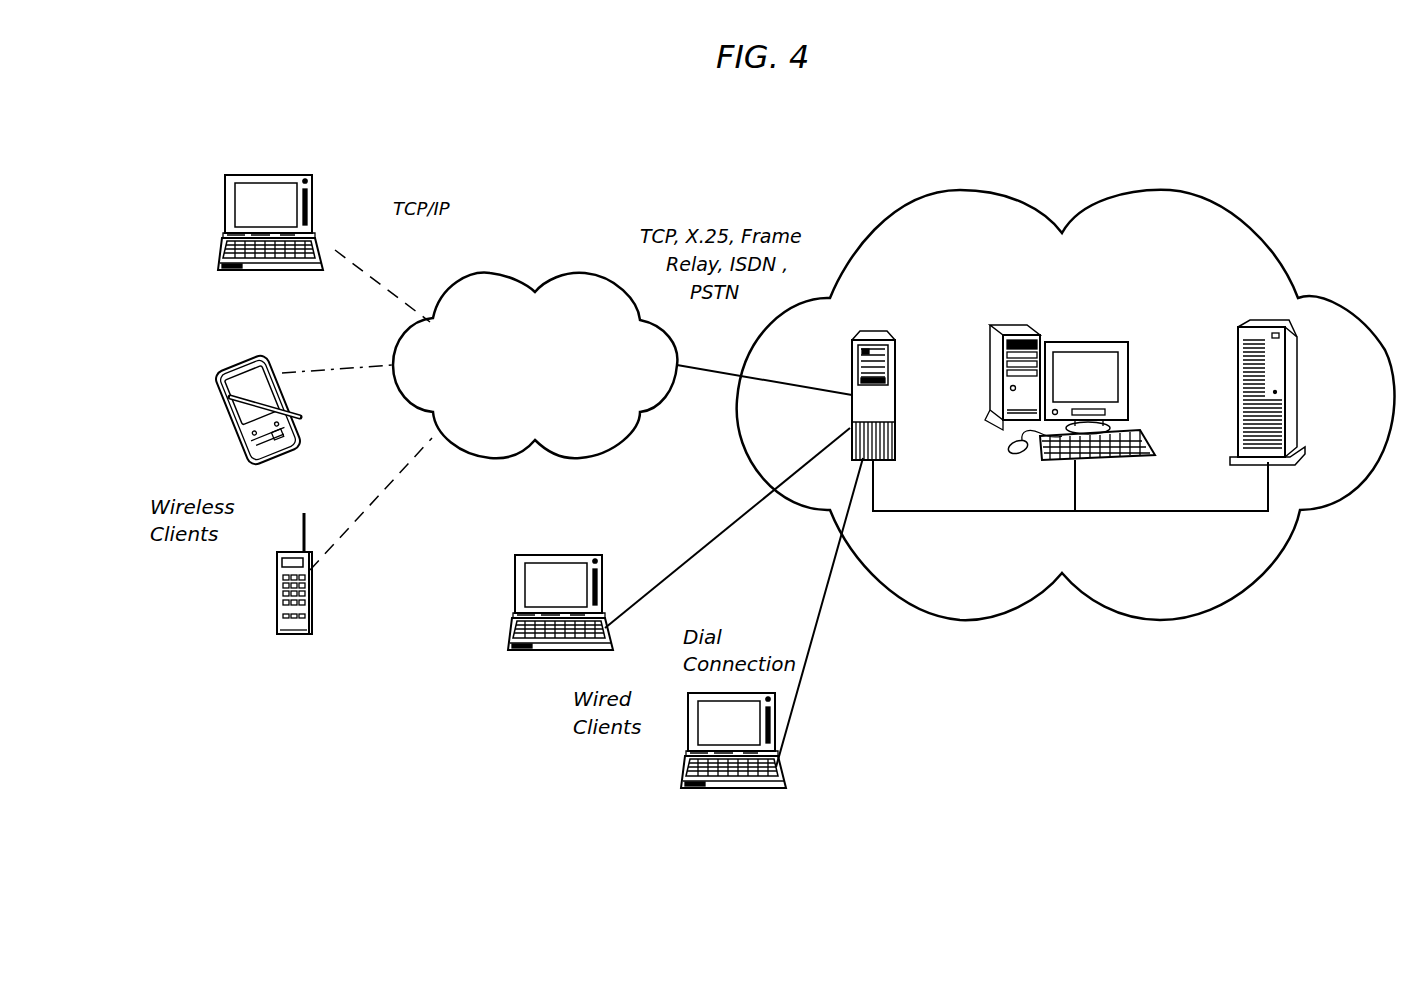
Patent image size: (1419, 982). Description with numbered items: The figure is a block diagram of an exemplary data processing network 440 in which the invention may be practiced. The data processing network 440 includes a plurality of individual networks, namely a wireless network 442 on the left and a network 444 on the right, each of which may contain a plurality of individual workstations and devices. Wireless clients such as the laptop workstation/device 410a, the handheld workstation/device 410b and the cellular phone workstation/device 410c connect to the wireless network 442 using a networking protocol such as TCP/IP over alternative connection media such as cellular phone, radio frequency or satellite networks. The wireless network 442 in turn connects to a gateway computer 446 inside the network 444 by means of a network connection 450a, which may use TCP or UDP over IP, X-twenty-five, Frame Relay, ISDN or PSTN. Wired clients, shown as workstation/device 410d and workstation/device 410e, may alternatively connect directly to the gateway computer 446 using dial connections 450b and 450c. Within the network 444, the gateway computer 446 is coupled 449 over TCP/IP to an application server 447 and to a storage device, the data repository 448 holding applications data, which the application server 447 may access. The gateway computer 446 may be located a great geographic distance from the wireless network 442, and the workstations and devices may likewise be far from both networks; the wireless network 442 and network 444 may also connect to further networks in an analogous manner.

The workstation/device 410a is at (312, 200).
The workstation/device 410b is at (300, 437).
The workstation/device 410c is at (312, 598).
The workstation/device 410d is at (560, 557).
The workstation/device 410e is at (685, 762).
The wireless network 442 is at (470, 275).
The network 444 is at (912, 200).
The gateway computer 446 is at (895, 385).
The application server 447 is at (1040, 328).
The data repository 448 is at (1297, 370).
The coupling 449 is at (1165, 512).
The network connection 450a is at (718, 372).
The dial connection 450b is at (675, 571).
The dial connection 450c is at (812, 650).
The data processing network 440 is at (1258, 756).